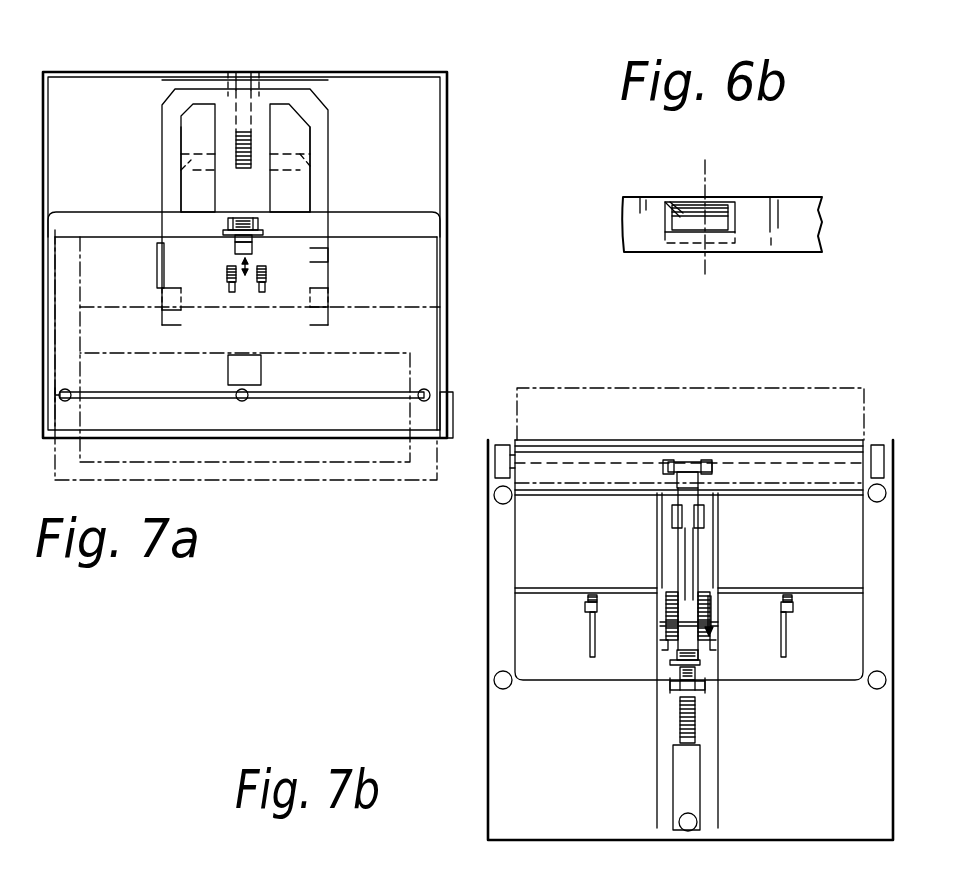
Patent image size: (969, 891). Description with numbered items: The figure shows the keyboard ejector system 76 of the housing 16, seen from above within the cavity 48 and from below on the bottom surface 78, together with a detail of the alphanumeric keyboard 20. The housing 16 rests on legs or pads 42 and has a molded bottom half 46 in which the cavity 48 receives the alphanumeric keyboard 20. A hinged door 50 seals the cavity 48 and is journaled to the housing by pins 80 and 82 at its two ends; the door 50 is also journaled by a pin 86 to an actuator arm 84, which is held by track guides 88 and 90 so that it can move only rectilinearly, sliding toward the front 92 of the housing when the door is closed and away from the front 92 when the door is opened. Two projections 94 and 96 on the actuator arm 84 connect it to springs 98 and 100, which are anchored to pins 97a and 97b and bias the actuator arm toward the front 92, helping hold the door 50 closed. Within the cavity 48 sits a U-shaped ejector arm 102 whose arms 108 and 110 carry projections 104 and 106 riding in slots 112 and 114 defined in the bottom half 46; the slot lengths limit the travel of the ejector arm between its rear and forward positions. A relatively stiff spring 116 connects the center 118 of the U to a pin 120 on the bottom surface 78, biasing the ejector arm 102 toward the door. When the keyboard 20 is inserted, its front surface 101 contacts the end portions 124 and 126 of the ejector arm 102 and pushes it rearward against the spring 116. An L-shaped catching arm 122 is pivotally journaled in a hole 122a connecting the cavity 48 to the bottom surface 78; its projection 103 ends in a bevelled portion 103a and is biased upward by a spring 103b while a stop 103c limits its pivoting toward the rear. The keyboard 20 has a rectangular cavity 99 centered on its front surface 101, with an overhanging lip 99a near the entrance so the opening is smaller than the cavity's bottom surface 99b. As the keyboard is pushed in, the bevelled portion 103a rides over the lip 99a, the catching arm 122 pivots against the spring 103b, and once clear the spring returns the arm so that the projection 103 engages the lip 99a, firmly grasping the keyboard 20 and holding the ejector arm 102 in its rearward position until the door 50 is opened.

In FIG. 7A, the housing 16 is at (442, 224).
In FIG. 7B, the housing 16 is at (488, 566).
In FIG. 6B, the alphanumeric keyboard 20 is at (788, 178).
In FIG. 7A, the legs or pads 42 is at (267, 450).
In FIG. 7B, the legs or pads 42 is at (494, 495).
In FIG. 7A, the bottom half 46 is at (450, 103).
In FIG. 7B, the bottom half 46 is at (488, 606).
In FIG. 7A, the cavity 48 is at (415, 288).
In FIG. 7B, the hinged door 50 is at (778, 388).
In FIG. 7A, the ejector system 76 is at (257, 72).
In FIG. 7B, the ejector system 76 is at (714, 441).
In FIG. 7B, the bottom surface 78 is at (488, 785).
In FIG. 7B, the pin 80 is at (512, 460).
In FIG. 7B, the pin 82 is at (872, 462).
In FIG. 7B, the actuator arm 84 is at (662, 548).
In FIG. 7B, the pin 86 is at (686, 462).
In FIG. 7B, the track guide 88 is at (672, 517).
In FIG. 7B, the track guide 90 is at (705, 518).
In FIG. 7B, the front 92 is at (539, 440).
In FIG. 7B, the projection 94 is at (660, 624).
In FIG. 7B, the projection 96 is at (717, 642).
In FIG. 7A, the pin 97a is at (238, 290).
In FIG. 7A, the pin 97b is at (258, 280).
In FIG. 7A, the spring 98 is at (229, 270).
In FIG. 7B, the spring 98 is at (666, 600).
In FIG. 6B, the cavity 99 is at (689, 215).
In FIG. 6B, the overhanging lip 99a is at (690, 240).
In FIG. 6B, the bottom surface 99b is at (723, 218).
In FIG. 7A, the spring 100 is at (267, 270).
In FIG. 7B, the spring 100 is at (712, 602).
In FIG. 6B, the front surface 101 is at (747, 218).
In FIG. 7A, the ejector arm 102 is at (332, 125).
In FIG. 7A, the projection 103 is at (255, 232).
In FIG. 7B, the projection 103 is at (670, 663).
In FIG. 7A, the bevelled portion 103a is at (250, 243).
In FIG. 7B, the spring 103b is at (680, 675).
In FIG. 7A, the stop 103c is at (228, 228).
In FIG. 7B, the projection 104 is at (585, 604).
In FIG. 7B, the projection 106 is at (793, 606).
In FIG. 7A, the arm 108 is at (172, 150).
In FIG. 7A, the arm 110 is at (326, 159).
In FIG. 7B, the slot 112 is at (590, 645).
In FIG. 7B, the slot 114 is at (786, 645).
In FIG. 7A, the spring 116 is at (236, 133).
In FIG. 7B, the spring 116 is at (695, 735).
In FIG. 7A, the center 118 is at (232, 96).
In FIG. 7B, the pin 120 is at (690, 690).
In FIG. 7A, the catching arm 122 is at (232, 251).
In FIG. 7B, the catching arm 122 is at (678, 654).
In FIG. 7B, the hole 122a is at (700, 663).
In FIG. 7A, the end portion 124 is at (165, 268).
In FIG. 7A, the end portion 126 is at (312, 254).